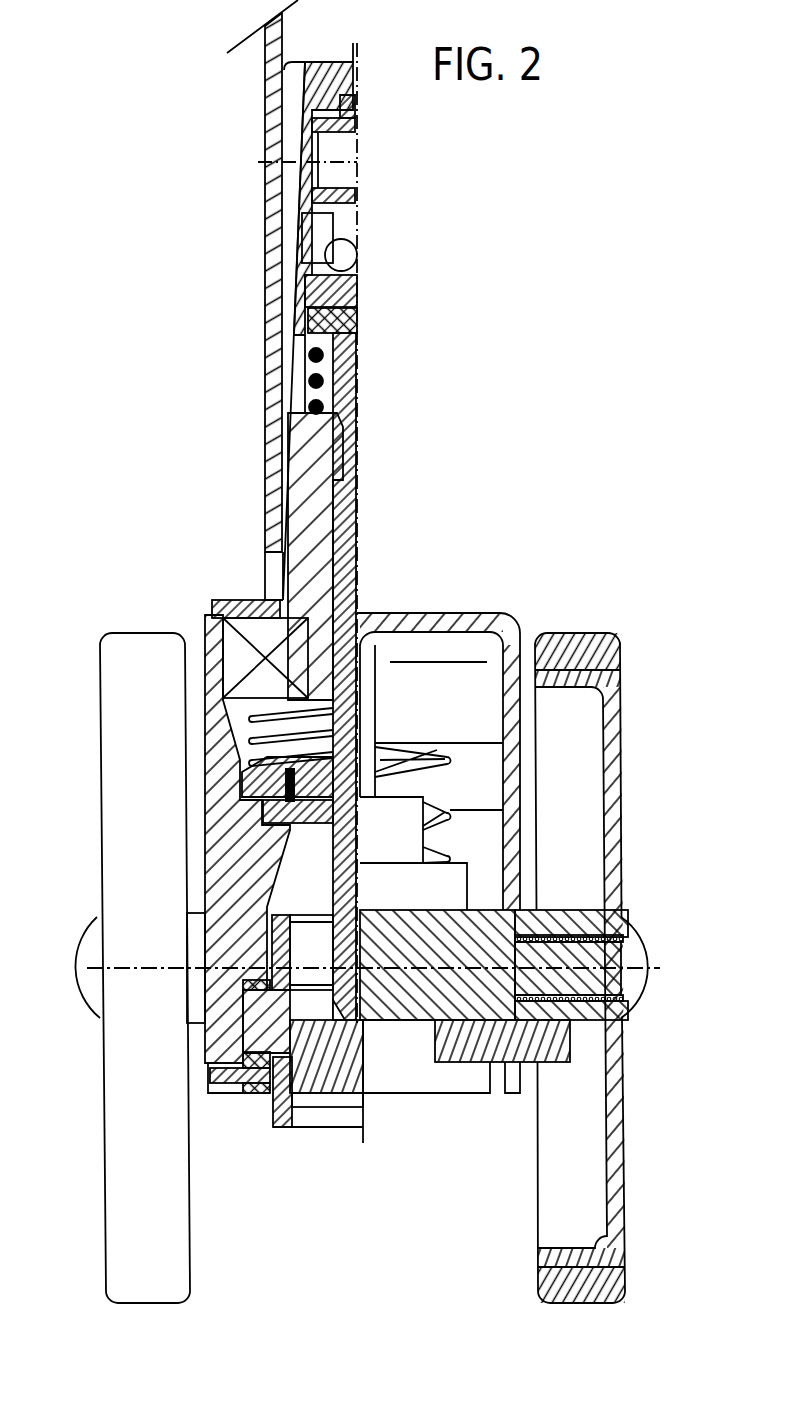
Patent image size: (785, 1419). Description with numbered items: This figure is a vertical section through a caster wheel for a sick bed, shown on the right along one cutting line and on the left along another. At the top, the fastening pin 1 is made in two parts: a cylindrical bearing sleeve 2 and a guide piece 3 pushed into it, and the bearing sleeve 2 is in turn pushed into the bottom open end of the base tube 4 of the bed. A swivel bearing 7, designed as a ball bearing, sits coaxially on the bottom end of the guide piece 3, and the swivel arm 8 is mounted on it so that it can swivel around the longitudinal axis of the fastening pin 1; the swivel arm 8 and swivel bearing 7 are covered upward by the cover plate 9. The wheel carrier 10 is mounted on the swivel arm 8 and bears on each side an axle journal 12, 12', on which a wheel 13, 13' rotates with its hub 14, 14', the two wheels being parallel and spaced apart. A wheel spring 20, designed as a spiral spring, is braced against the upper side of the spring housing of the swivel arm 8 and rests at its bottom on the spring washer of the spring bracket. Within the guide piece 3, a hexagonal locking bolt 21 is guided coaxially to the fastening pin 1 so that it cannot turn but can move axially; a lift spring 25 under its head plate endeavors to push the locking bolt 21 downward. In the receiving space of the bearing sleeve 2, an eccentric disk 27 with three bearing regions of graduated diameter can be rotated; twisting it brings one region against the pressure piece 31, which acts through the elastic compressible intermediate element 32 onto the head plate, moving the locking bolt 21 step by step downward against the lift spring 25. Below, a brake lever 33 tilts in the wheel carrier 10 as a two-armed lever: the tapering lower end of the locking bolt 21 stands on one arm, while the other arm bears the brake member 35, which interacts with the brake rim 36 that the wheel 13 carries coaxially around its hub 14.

The fastening pin 1 is at (262, 325).
The bearing sleeve 2 is at (290, 247).
The guide piece 3 is at (300, 462).
The base tube 4 is at (262, 124).
The swivel bearing 7 is at (258, 635).
The swivel arm 8 is at (458, 610).
The cover plate 9 is at (223, 600).
The wheel carrier 10 is at (484, 910).
The axle journal 12 is at (605, 967).
The wheel 13 is at (612, 968).
The hub 14 is at (604, 932).
The wheel spring 20 is at (433, 767).
The locking bolt 21 is at (350, 508).
The lift spring 25 is at (307, 392).
The eccentric disk 27 is at (352, 210).
The pressure piece 31 is at (347, 293).
The elastic compressible intermediate element 32 is at (357, 328).
The brake lever 33 is at (550, 1062).
The brake member 35 is at (560, 1040).
The brake rim 36 is at (627, 1013).
The wheel 13' is at (117, 962).
The hub 14' is at (125, 937).
The axle journal 12' is at (117, 977).